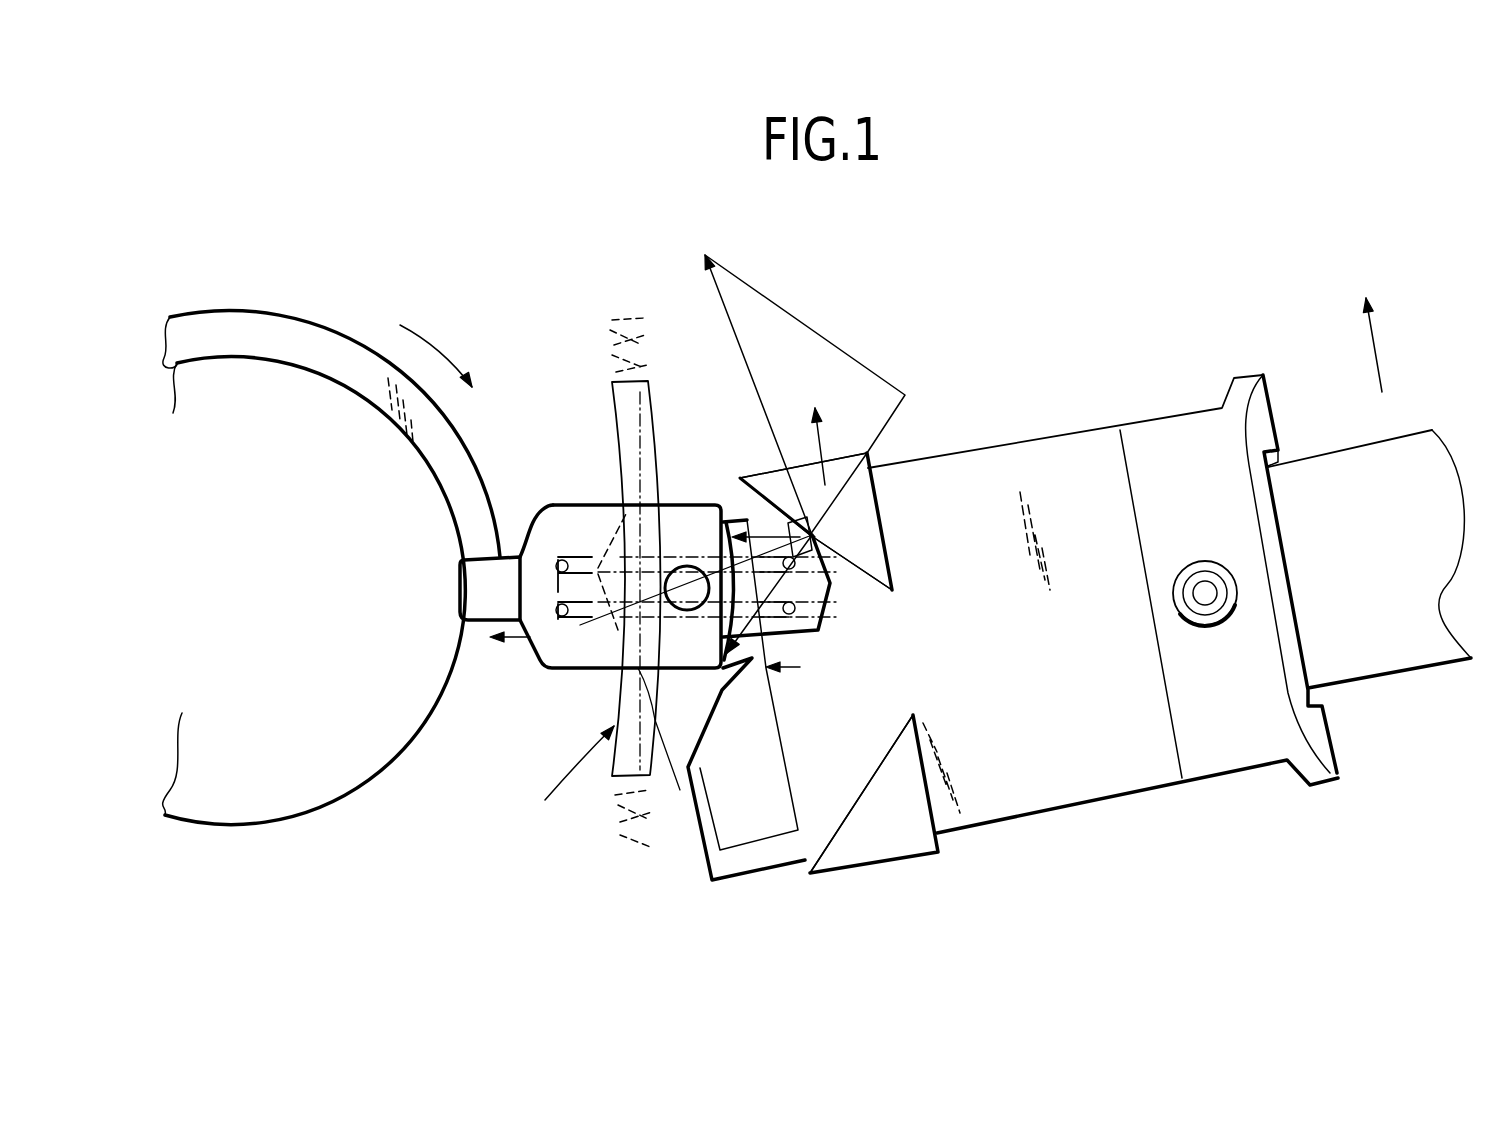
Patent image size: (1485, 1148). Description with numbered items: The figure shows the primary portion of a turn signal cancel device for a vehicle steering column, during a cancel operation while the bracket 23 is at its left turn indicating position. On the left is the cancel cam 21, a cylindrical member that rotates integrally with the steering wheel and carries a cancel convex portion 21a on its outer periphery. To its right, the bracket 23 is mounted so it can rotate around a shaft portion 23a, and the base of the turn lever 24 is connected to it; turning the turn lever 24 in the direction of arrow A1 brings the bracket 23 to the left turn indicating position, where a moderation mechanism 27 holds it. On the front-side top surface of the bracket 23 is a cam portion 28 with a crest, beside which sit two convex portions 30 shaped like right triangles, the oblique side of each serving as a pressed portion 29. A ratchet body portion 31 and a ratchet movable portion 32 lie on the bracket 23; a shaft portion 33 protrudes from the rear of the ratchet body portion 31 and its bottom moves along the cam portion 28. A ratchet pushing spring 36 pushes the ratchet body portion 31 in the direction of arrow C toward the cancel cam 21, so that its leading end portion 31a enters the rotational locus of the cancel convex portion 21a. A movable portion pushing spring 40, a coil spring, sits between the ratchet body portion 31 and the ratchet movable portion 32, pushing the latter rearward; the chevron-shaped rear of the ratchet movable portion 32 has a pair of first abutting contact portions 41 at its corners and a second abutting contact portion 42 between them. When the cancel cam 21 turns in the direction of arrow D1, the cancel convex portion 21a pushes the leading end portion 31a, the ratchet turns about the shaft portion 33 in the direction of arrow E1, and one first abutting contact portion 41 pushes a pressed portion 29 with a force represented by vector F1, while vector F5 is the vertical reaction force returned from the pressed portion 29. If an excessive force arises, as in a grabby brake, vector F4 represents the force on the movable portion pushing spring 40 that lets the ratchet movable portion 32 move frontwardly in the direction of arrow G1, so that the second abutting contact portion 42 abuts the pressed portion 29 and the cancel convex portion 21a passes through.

The cancel cam 21 is at (331, 526).
The cancel convex portion 21a is at (305, 335).
The bracket 23 is at (1103, 585).
The shaft portion 23a is at (1205, 580).
The turn lever 24 is at (1393, 655).
The moderation mechanism 27 is at (594, 606).
The cam portion 28 is at (720, 700).
The pressed portion 29 is at (842, 548).
The convex portion 30 is at (882, 492).
The ratchet body portion 31 is at (585, 539).
The leading end portion 31a is at (448, 580).
The ratchet movable portion 32 is at (818, 614).
The shaft portion 33 is at (660, 585).
The ratchet pushing spring 36 is at (606, 780).
The movable portion pushing spring 40 is at (573, 620).
The first abutting contact portion 41 is at (850, 535).
The second abutting contact portion 42 is at (843, 585).
The arrow A1 is at (1384, 345).
The arrow C is at (506, 640).
The arrow D1 is at (440, 354).
The arrow E1 is at (828, 442).
The vector F1 is at (762, 377).
The vector F4 is at (748, 520).
The vector F5 is at (745, 645).
The arrow G1 is at (800, 668).